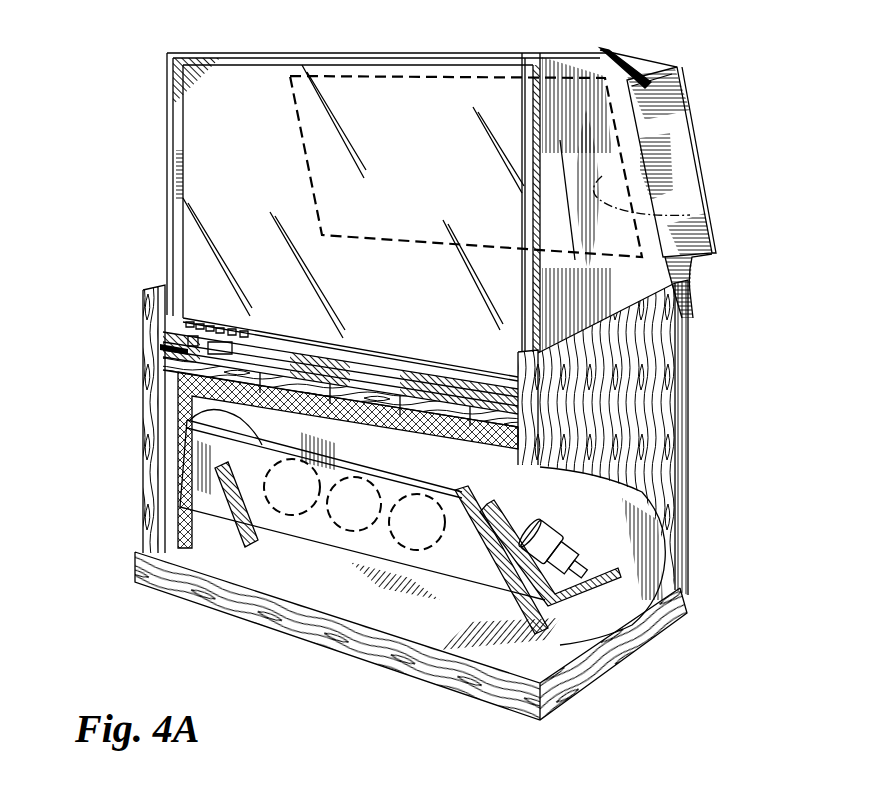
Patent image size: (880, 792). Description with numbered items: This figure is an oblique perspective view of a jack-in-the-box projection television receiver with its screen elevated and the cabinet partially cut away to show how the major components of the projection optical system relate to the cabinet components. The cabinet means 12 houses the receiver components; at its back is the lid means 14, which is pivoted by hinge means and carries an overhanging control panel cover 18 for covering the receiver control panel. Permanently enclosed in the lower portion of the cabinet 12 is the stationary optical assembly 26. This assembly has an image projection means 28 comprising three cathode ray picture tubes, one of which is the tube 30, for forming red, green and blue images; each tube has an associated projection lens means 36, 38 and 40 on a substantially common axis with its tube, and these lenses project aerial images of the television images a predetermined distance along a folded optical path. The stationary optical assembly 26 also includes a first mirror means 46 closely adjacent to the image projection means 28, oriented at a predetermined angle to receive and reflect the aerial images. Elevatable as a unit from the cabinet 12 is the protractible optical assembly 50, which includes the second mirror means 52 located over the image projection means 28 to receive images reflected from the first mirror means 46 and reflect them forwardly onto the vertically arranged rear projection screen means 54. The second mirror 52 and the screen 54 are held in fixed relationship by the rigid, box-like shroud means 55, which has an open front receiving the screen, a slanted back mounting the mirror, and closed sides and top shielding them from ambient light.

The cabinet means 12 is at (143, 460).
The lid means 14 is at (686, 100).
The control panel cover 18 is at (612, 60).
The stationary optical assembly 26 is at (600, 545).
The image projection means 28 is at (310, 540).
The cathode ray tube 30 is at (592, 563).
The projection lens means 36 is at (418, 520).
The projection lens means 38 is at (350, 500).
The projection lens means 40 is at (273, 550).
The first mirror means 46 is at (185, 397).
The protractible optical assembly 50 is at (422, 201).
The second mirror means 52 is at (662, 218).
The rear projection screen means 54 is at (215, 218).
The shroud means 55 is at (167, 78).